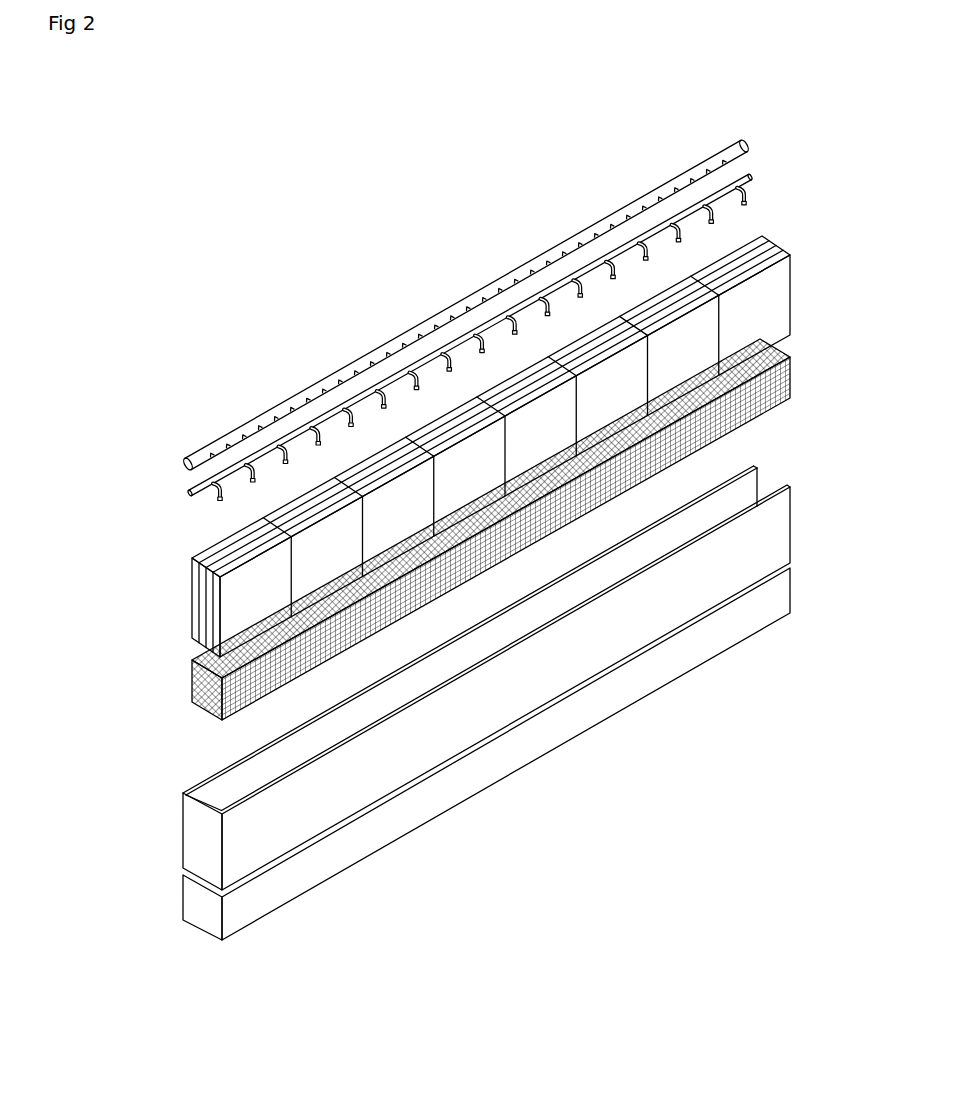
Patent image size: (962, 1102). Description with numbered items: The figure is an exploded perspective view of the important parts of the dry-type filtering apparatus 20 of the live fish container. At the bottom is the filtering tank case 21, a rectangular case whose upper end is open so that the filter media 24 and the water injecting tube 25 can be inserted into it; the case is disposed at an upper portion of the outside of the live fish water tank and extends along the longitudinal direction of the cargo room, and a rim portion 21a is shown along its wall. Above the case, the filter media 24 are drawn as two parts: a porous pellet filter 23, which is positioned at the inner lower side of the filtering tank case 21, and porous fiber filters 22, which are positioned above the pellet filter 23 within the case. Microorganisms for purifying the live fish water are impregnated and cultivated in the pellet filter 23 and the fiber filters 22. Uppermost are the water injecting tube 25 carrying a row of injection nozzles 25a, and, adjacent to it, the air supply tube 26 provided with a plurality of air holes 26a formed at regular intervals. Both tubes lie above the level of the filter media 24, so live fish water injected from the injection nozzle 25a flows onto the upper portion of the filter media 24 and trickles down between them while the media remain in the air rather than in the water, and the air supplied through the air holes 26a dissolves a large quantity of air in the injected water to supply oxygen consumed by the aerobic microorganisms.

The dry-type filtering apparatus 20 is at (416, 189).
The filtering tank case 21 is at (528, 784).
The guide rim of lower case 21a is at (623, 660).
The porous fiber filters 22 is at (213, 623).
The porous pellet filter 23 is at (195, 694).
The filter media 24 is at (75, 578).
The water injecting tube 25 is at (750, 177).
The injection nozzle 25a is at (668, 238).
The air supply tube 26 is at (247, 423).
The air holes 26a is at (325, 393).